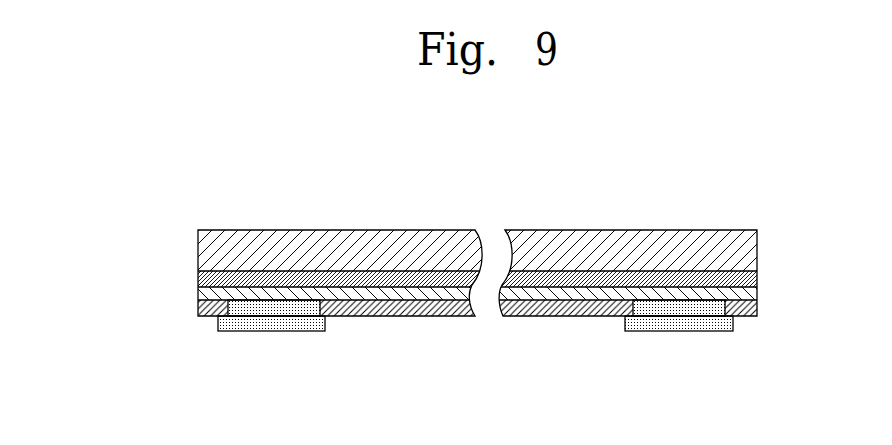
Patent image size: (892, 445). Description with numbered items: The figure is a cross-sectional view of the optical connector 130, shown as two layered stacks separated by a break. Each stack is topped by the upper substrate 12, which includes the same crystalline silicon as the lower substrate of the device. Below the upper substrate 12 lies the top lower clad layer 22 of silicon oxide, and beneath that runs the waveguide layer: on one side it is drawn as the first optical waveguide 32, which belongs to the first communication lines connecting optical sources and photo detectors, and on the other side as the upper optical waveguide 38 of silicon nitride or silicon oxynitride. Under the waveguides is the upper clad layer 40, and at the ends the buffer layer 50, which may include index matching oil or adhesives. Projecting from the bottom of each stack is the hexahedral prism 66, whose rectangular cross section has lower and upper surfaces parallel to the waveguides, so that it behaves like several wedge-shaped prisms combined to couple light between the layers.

The upper substrate 12 is at (205, 245).
The top lower clad layer 22 is at (199, 278).
The first optical waveguide 32 is at (199, 293).
The upper optical waveguide 38 is at (748, 297).
The upper clad layer 40 is at (420, 318).
The buffer layer 50 is at (199, 308).
The hexahedral prism 66 is at (280, 325).
The optical connector 130 is at (775, 162).